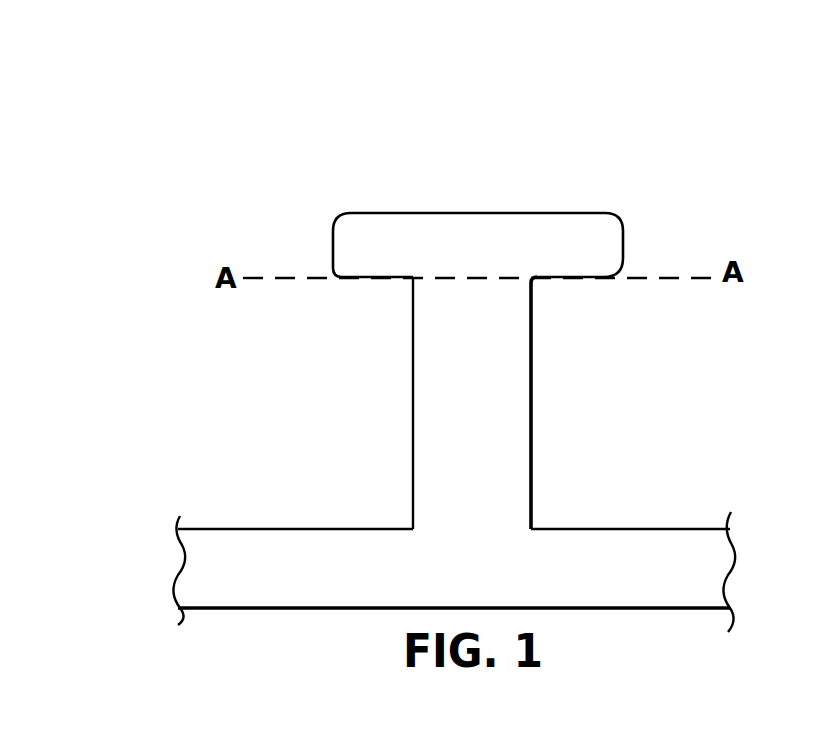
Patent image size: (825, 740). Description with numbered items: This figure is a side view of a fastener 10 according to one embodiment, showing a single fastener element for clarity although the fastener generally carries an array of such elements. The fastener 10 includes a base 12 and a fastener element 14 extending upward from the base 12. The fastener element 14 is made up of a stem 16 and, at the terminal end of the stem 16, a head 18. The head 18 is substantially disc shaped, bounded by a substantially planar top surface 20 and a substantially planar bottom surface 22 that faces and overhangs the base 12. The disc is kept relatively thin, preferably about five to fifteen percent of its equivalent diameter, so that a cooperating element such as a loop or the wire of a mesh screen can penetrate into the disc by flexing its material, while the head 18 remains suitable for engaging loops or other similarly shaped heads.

The fastener 10 is at (604, 86).
The base 12 is at (615, 548).
The fastener element 14 is at (243, 229).
The stem 16 is at (502, 426).
The head 18 is at (526, 180).
The top surface 20 is at (434, 213).
The bottom surface 22 is at (383, 280).